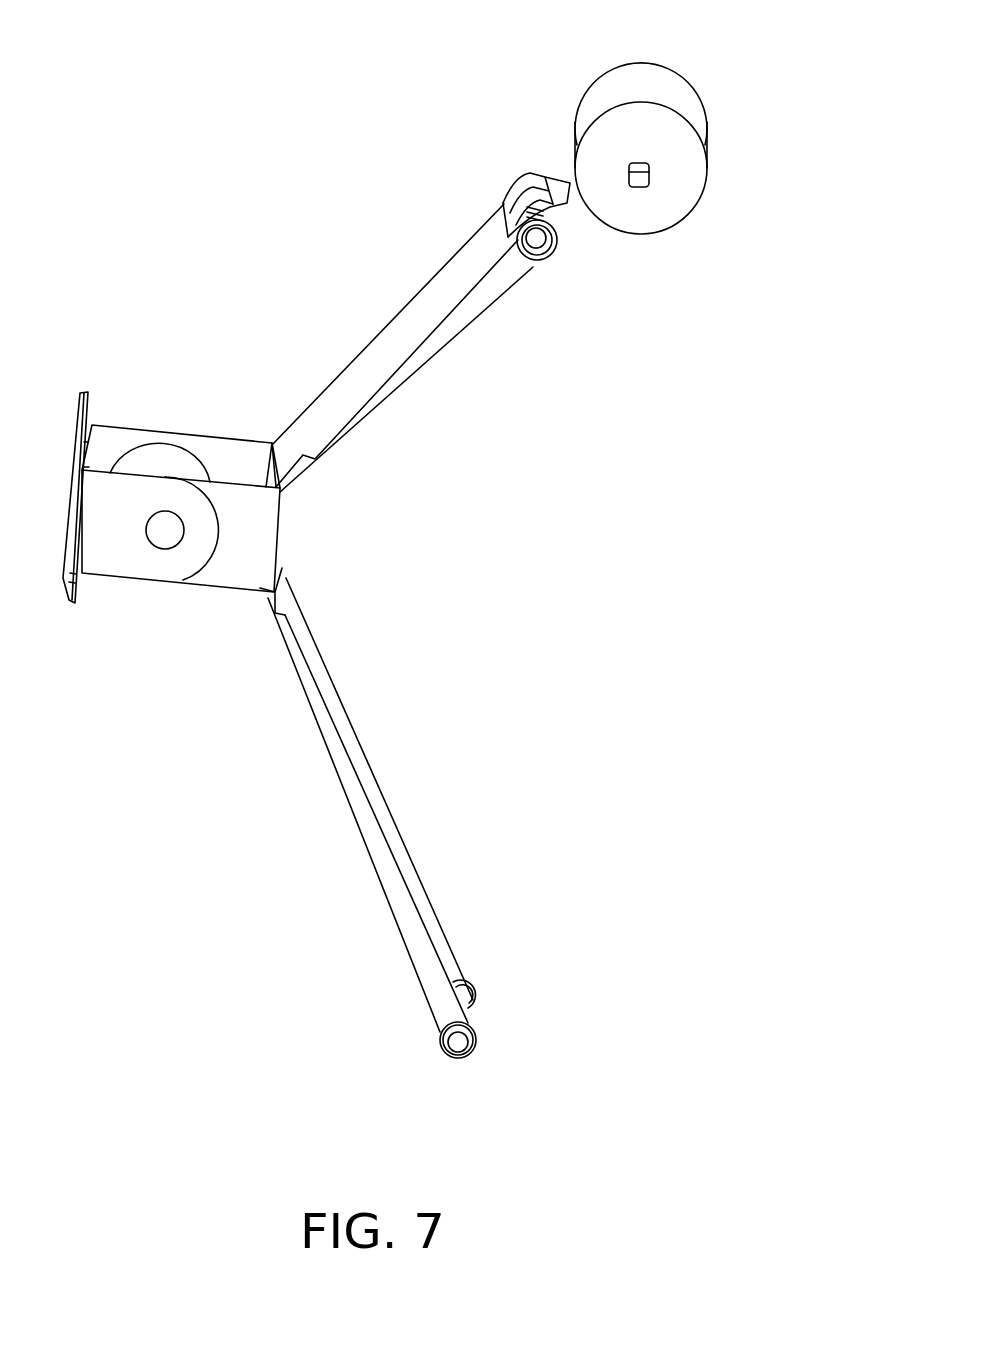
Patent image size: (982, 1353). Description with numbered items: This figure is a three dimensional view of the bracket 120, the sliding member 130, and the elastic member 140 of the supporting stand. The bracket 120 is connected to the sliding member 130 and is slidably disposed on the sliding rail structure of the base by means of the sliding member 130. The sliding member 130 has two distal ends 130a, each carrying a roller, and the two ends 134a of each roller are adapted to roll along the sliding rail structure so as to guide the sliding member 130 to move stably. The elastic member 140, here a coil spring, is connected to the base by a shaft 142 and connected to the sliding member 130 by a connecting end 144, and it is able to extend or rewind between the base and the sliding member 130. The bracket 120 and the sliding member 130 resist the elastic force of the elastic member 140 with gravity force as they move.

The bracket 120 is at (112, 550).
The sliding member 130 is at (257, 530).
The distal ends of the sliding member 130a is at (578, 249).
The ends of the roller 134a is at (536, 250).
The elastic member 140 is at (697, 170).
The shaft 142 is at (640, 187).
The connecting end 144 is at (553, 190).